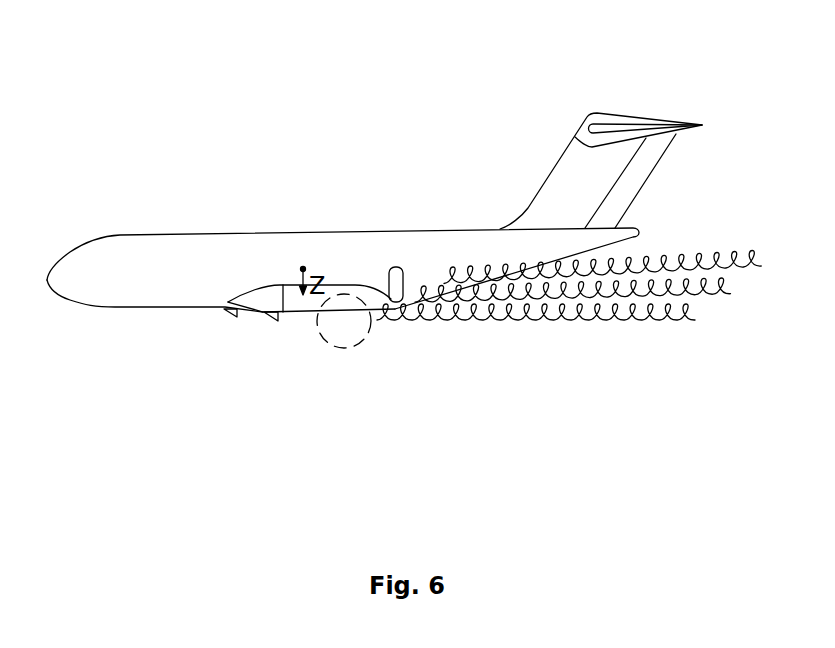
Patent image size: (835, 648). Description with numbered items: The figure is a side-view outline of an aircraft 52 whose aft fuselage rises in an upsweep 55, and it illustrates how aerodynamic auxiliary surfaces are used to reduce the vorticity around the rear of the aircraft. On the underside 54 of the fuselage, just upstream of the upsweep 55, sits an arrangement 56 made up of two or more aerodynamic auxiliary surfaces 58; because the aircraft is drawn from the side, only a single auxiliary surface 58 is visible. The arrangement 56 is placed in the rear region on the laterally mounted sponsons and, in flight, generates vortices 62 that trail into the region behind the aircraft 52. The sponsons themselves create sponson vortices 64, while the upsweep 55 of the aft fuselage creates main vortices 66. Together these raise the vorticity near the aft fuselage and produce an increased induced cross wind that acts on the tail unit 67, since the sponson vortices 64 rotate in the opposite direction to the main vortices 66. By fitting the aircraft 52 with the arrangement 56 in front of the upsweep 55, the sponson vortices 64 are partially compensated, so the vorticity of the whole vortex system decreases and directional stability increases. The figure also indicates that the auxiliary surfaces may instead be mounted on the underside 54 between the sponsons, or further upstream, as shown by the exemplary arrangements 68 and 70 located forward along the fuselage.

The aircraft 52 is at (295, 138).
The underside 54 is at (236, 403).
The upsweep 55 is at (440, 322).
The arrangement 56 is at (368, 330).
The aerodynamic auxiliary surface 58 is at (342, 316).
The vortices 62 is at (638, 322).
The sponson vortices 64 is at (717, 300).
The main vortices 66 is at (708, 270).
The tail unit 67 is at (570, 171).
The arrangement 68 is at (232, 314).
The arrangement 70 is at (273, 318).